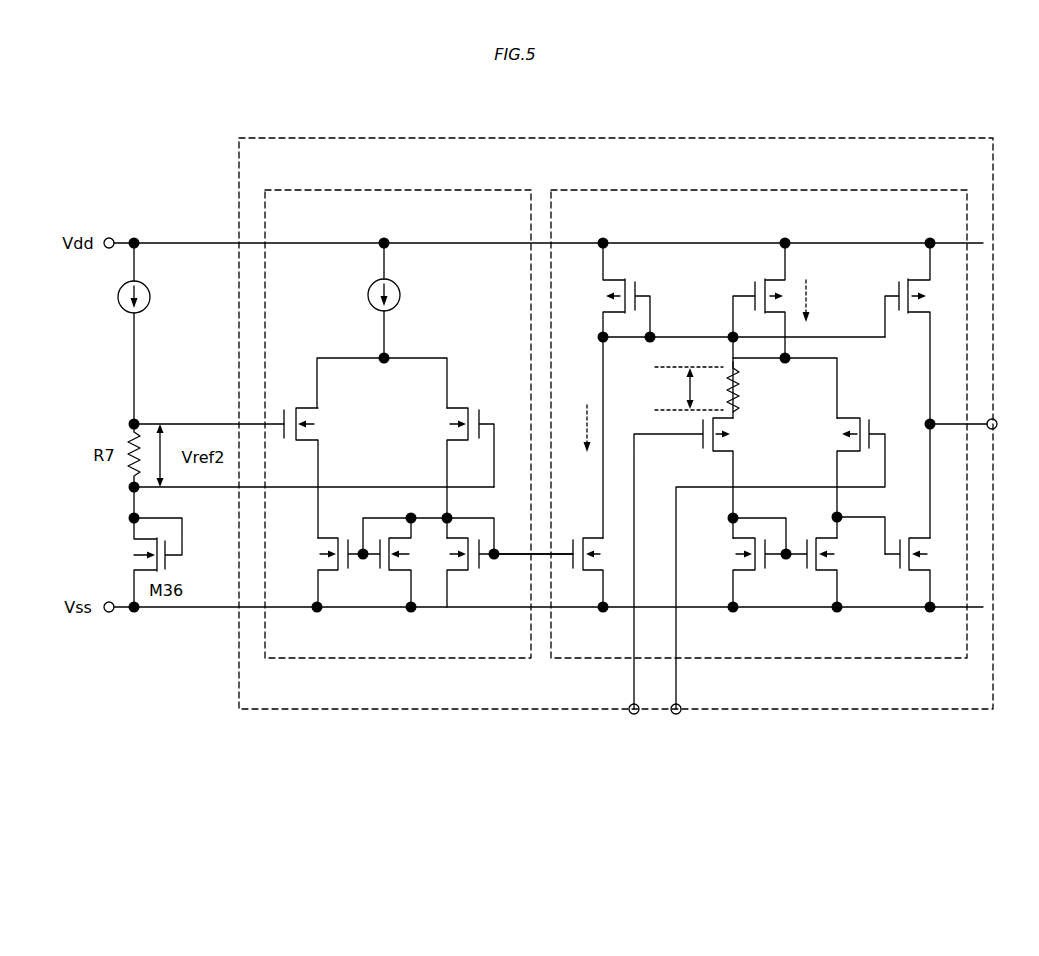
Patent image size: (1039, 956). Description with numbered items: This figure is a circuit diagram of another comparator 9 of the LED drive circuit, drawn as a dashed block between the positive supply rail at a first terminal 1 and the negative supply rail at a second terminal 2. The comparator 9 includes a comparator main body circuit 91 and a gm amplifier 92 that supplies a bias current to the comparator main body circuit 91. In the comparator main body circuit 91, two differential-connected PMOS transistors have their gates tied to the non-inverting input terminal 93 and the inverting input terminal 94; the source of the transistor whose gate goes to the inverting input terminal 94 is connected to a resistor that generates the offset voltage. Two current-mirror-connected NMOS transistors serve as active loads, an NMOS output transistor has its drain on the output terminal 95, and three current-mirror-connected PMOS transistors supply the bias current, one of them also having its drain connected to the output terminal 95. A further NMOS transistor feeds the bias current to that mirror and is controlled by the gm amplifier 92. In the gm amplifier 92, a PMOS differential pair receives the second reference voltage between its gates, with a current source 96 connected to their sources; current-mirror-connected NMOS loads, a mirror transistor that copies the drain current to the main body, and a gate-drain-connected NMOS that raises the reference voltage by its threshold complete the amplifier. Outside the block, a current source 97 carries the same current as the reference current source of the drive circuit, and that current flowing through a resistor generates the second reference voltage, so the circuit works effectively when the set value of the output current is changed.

The power supply terminal Vdd 1 is at (109, 238).
The ground terminal Vss 2 is at (109, 612).
The comparator 9 is at (557, 138).
The comparator main body circuit 91 is at (696, 190).
The gm amplifier 92 is at (369, 190).
The non-inverting input terminal 93 is at (680, 713).
The inverting input terminal 94 is at (630, 713).
The output terminal 95 is at (996, 420).
The current source 96 is at (400, 295).
The current source 97 is at (150, 297).